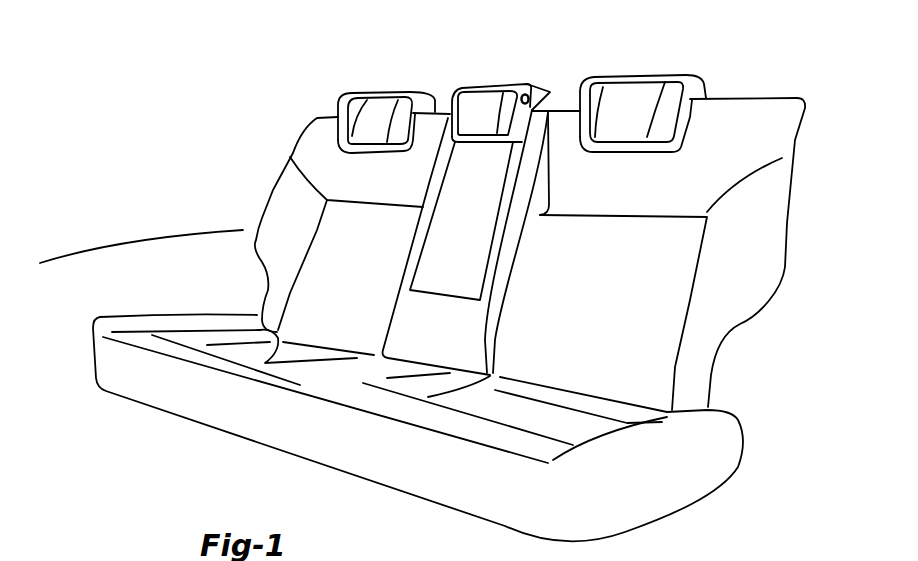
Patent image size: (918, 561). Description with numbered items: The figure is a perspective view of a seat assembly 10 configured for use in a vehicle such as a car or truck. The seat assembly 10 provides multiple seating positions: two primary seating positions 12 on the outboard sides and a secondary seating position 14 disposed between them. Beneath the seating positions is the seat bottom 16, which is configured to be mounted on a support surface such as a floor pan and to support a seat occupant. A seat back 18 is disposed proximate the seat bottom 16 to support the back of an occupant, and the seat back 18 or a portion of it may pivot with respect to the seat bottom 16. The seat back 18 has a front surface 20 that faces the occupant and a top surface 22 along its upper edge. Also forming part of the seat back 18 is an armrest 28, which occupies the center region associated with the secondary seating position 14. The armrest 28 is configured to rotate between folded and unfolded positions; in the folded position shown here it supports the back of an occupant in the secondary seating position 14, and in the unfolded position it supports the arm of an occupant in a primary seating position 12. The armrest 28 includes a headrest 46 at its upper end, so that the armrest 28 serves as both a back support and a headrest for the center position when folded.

The seat assembly 10 is at (253, 168).
The primary seating position 12 is at (376, 82).
The secondary seating position 14 is at (490, 70).
The seat bottom 16 is at (692, 487).
The seat back 18 is at (773, 130).
The front surface 20 is at (538, 111).
The top surface 22 is at (723, 98).
The armrest 28 is at (450, 214).
The headrest 46 is at (473, 112).